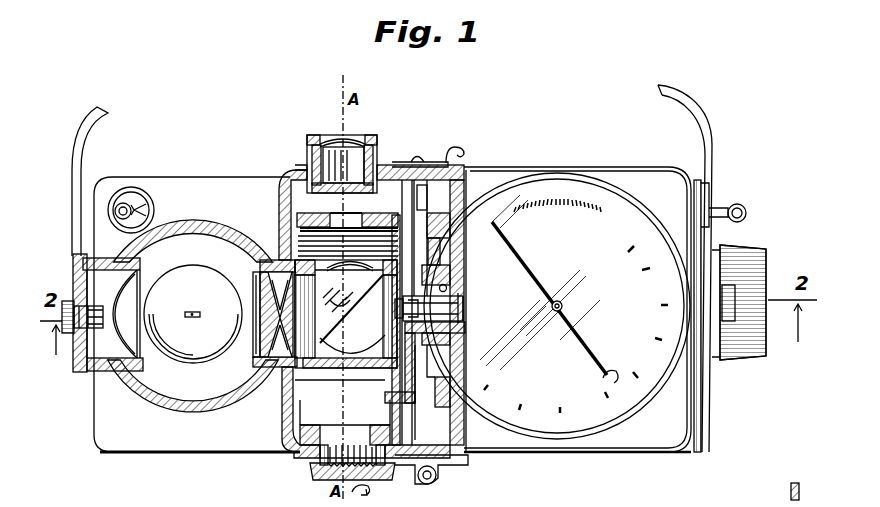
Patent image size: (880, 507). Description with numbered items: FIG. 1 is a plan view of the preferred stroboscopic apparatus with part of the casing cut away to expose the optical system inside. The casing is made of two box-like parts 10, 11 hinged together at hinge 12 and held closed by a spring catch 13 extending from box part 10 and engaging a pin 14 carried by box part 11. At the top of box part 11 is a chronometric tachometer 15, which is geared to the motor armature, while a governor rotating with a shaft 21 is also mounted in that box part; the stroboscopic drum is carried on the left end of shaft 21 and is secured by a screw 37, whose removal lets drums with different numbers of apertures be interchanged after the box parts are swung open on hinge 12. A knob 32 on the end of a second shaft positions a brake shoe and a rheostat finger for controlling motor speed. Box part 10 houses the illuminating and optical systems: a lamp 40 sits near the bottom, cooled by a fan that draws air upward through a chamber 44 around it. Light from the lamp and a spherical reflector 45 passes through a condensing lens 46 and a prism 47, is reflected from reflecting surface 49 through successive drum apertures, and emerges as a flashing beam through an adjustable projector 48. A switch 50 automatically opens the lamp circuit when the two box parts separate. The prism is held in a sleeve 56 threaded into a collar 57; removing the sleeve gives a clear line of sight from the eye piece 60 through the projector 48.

The box-like part 10 is at (202, 188).
The box-like part 11 is at (637, 169).
The hinge 12 is at (440, 480).
The spring catch 13 is at (448, 160).
The pin 14 is at (425, 159).
The chronometric tachometer 15 is at (585, 418).
The shaft 21 is at (460, 294).
The knob 32 is at (748, 360).
The screw 37 is at (400, 315).
The lamp 40 is at (193, 314).
The chamber 44 is at (174, 392).
The reflector 45 is at (92, 372).
The condensing lens 46 is at (256, 343).
The prism 47 is at (346, 314).
The projector 48 is at (333, 148).
The reflecting surface 49 is at (347, 315).
The switch 50 is at (468, 170).
The sleeve 56 is at (316, 228).
The collar 57 is at (282, 240).
The eye piece 60 is at (392, 474).